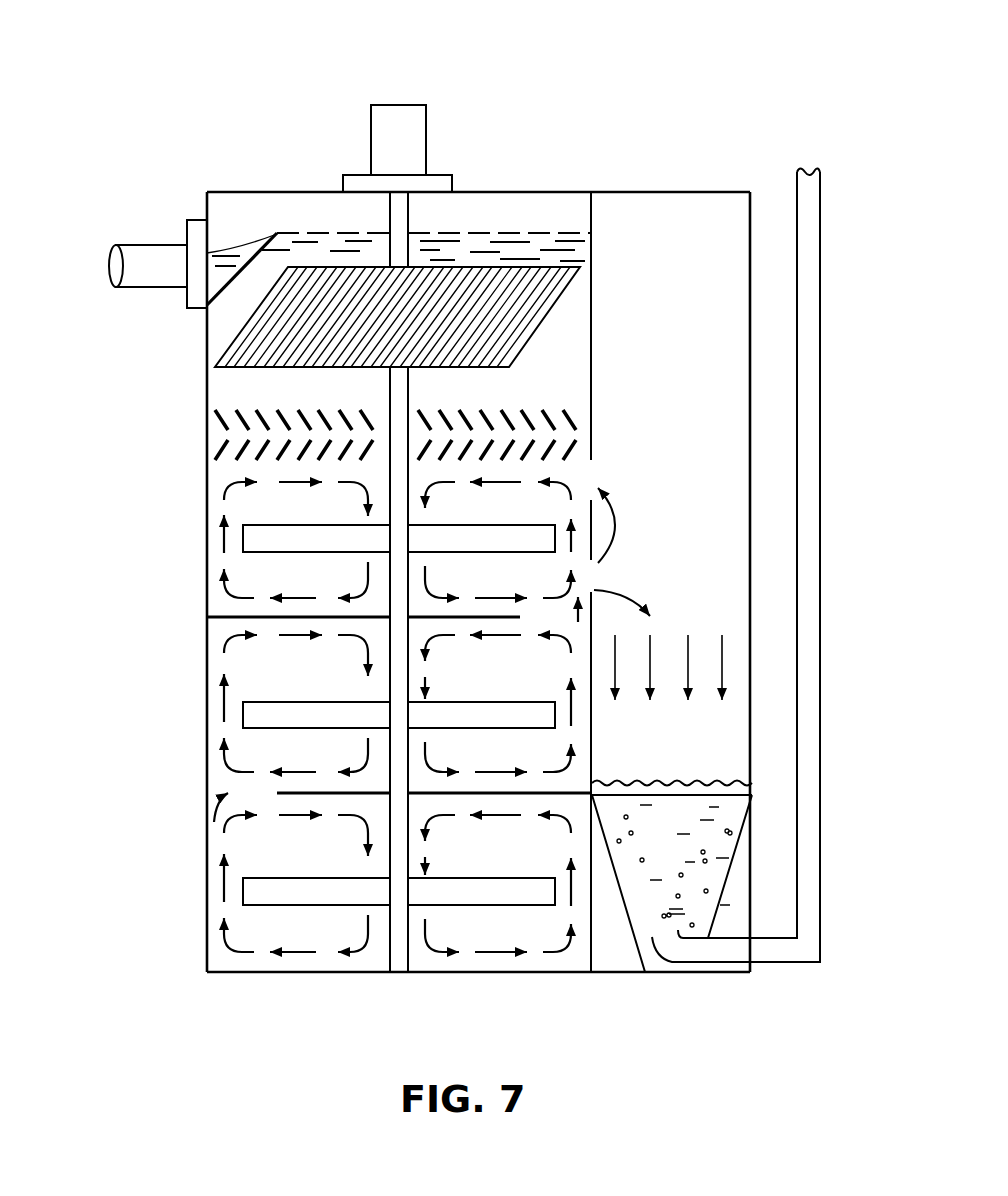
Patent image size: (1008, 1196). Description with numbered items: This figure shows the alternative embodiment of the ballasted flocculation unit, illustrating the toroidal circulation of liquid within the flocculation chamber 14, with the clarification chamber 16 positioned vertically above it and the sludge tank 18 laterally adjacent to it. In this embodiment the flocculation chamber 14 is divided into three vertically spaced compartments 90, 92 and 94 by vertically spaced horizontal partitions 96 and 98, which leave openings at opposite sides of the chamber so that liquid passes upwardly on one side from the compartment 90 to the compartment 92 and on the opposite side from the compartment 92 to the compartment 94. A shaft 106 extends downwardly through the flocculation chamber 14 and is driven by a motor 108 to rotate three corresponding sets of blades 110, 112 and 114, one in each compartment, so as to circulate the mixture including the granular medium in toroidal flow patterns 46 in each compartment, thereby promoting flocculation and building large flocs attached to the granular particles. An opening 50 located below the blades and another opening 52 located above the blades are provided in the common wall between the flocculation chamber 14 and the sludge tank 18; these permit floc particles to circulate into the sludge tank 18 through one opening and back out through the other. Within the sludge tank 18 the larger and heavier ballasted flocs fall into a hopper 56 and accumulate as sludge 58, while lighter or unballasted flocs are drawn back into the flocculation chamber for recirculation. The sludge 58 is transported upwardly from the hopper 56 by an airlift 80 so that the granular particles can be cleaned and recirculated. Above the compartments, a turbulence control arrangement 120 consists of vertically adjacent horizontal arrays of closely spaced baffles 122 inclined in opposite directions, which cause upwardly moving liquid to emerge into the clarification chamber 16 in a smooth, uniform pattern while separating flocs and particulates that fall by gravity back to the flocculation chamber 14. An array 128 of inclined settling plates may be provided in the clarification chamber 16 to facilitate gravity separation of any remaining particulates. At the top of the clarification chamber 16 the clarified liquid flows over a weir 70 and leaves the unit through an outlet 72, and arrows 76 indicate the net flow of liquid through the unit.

The flocculation chamber 14 is at (205, 621).
The clarification chamber 16 is at (205, 193).
The sludge tank 18 is at (756, 288).
The toroidal flow patterns 46 is at (223, 497).
The opening 50 is at (594, 574).
The opening 52 is at (594, 468).
The hopper 56 is at (727, 892).
The sludge 58 is at (714, 831).
The weir 70 is at (258, 245).
The outlet 72 is at (143, 248).
The arrows 76 is at (688, 667).
The airlift 80 is at (812, 843).
The compartment 90 is at (320, 770).
The compartment 92 is at (330, 728).
The compartment 94 is at (324, 589).
The horizontal partition 96 is at (277, 794).
The horizontal partition 98 is at (245, 619).
The shaft 106 is at (388, 396).
The motor 108 is at (400, 113).
The set of blades 110 is at (255, 893).
The set of blades 112 is at (255, 718).
The set of blades 114 is at (255, 539).
The turbulence control arrangement 120 is at (216, 433).
The baffles 122 is at (530, 413).
The array of inclined settling plates 128 is at (247, 318).